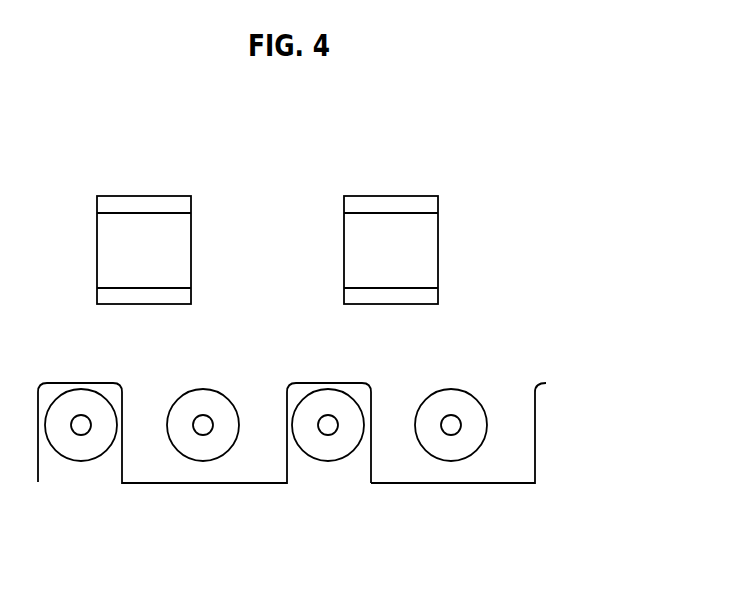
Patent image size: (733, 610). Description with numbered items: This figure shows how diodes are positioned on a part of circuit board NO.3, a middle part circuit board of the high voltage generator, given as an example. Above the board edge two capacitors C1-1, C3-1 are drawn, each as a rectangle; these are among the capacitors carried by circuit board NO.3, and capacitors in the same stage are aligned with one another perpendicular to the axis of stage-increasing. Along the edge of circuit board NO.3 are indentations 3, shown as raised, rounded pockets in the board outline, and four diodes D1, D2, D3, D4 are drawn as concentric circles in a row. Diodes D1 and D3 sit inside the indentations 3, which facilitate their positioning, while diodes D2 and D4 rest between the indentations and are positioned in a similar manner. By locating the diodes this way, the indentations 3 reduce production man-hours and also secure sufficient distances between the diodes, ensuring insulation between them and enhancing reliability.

The capacitor C1-1 is at (165, 262).
The capacitor C3-1 is at (418, 262).
The indentation 3 is at (118, 467).
The circuit board No. 3 NO.3 is at (510, 432).
The diode D1 is at (81, 461).
The diode D2 is at (203, 461).
The diode D3 is at (328, 461).
The diode D4 is at (451, 461).